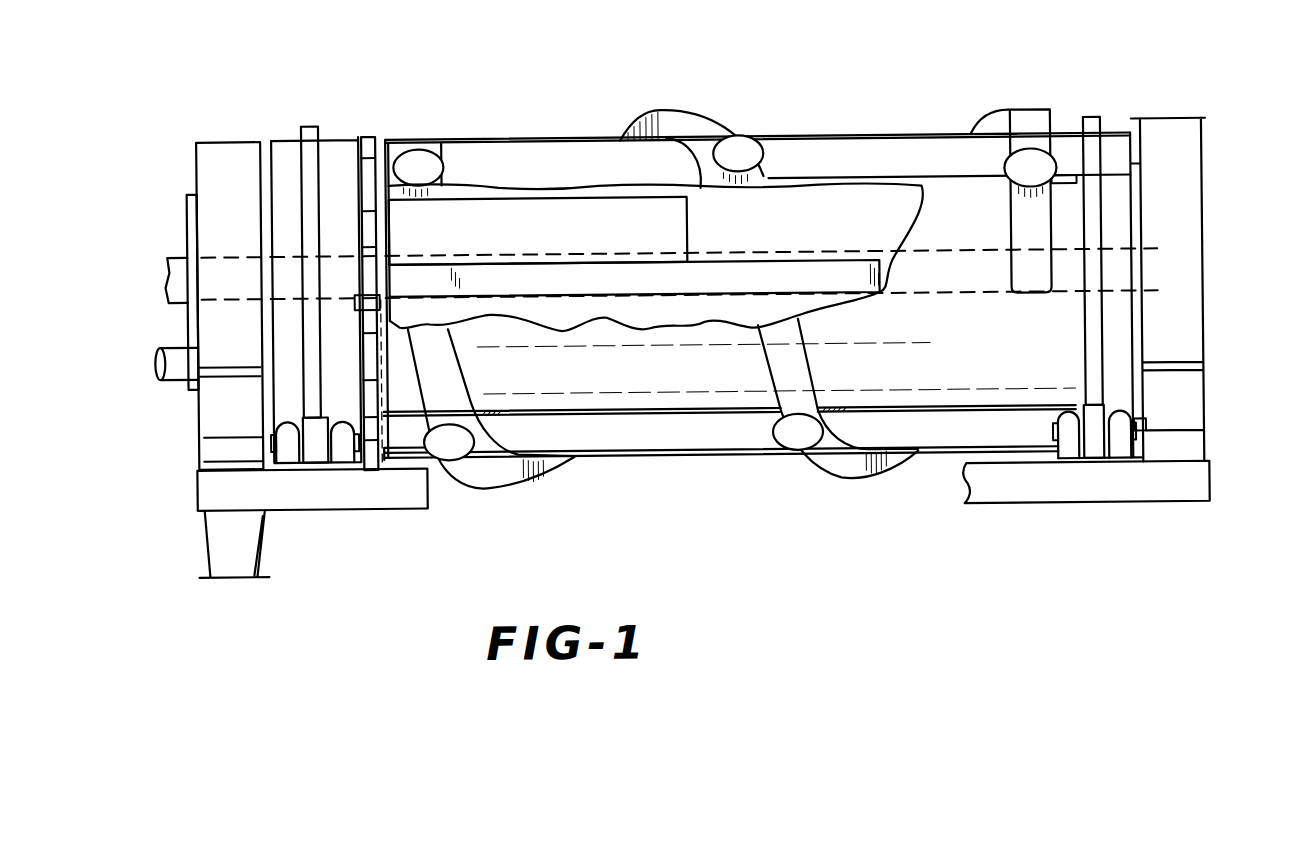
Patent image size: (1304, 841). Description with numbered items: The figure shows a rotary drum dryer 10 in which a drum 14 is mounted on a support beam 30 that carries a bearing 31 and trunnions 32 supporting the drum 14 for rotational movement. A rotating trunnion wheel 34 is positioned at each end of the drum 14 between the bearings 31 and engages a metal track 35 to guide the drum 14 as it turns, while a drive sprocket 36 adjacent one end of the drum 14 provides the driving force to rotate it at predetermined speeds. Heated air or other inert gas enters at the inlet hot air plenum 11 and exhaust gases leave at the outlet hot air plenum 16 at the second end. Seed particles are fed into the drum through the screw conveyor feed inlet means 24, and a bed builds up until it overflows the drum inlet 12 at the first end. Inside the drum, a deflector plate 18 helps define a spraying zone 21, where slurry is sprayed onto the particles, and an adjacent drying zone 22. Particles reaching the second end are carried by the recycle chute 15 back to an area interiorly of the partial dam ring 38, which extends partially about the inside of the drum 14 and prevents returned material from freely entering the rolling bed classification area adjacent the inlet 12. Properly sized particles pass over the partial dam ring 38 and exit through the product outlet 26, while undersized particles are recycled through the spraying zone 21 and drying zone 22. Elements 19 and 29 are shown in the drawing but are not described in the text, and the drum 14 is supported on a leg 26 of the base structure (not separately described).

The rotary drum dryer 10 is at (600, 82).
The inlet hot air plenum 11 is at (238, 138).
The drum inlet 12 is at (263, 166).
The drum 14 is at (520, 137).
The recycle chute 15 is at (706, 110).
The outlet hot air plenum 16 is at (1190, 123).
The deflector plate 18 is at (527, 252).
The shaft 19 is at (167, 272).
The spraying zone 21 is at (547, 309).
The drying zone 22 is at (797, 304).
The screw conveyor feed inlet means 24 is at (157, 360).
The product outlet 26 is at (203, 535).
The roller 29 is at (797, 441).
The support beam 30 is at (197, 482).
The bearing 31 is at (290, 458).
The trunnion 32 is at (350, 433).
The rotating trunnion wheel 34 is at (315, 456).
The metal track 35 is at (312, 123).
The drive sprocket 36 is at (370, 134).
The partial dam ring 38 is at (430, 488).